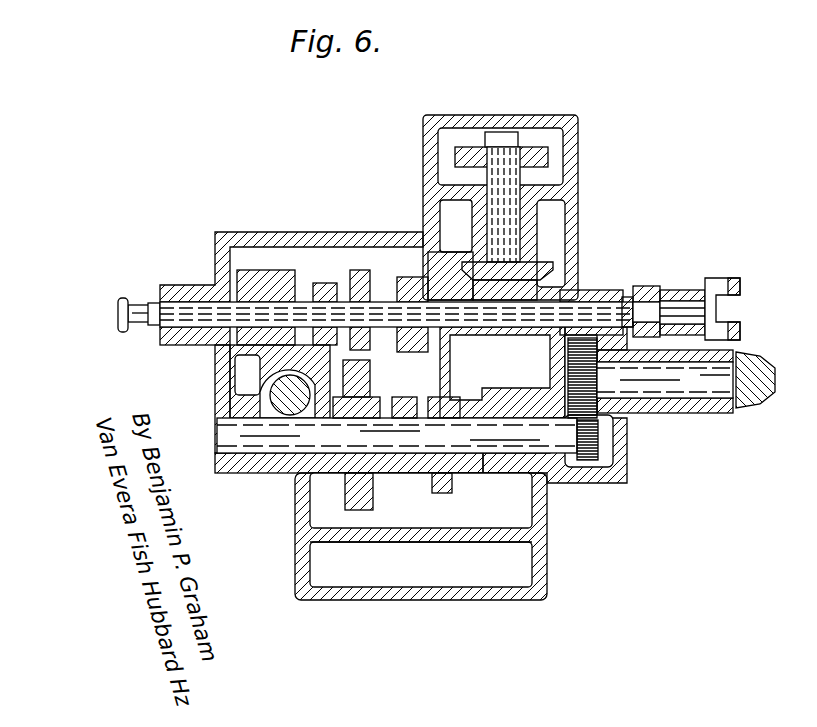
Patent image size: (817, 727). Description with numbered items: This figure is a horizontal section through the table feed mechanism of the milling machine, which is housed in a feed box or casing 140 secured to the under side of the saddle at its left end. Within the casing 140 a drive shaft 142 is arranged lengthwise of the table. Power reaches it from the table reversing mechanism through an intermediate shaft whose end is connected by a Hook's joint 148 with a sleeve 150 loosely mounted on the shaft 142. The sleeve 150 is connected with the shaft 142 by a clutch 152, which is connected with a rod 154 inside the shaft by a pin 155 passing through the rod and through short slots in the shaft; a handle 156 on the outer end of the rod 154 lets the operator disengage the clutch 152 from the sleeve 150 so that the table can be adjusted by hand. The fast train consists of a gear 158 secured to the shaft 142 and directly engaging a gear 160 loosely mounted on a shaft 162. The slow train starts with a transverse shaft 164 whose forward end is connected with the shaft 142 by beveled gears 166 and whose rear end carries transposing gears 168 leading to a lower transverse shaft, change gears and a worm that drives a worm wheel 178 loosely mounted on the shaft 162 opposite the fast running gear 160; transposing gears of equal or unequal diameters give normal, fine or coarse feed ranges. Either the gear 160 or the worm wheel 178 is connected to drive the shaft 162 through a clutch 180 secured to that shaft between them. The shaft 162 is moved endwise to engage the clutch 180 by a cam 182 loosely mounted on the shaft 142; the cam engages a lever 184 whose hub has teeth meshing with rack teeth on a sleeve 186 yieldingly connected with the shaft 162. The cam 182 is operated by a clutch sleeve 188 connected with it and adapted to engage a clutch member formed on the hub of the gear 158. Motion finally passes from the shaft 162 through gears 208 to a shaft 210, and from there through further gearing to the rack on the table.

The feed box or casing 140 is at (578, 215).
The drive shaft 142 is at (600, 292).
The Hook's joint 148 is at (742, 283).
The sleeve 150 is at (688, 292).
The clutch 152 is at (648, 290).
The rod 154 is at (152, 302).
The pin 155 is at (632, 296).
The handle 156 is at (125, 298).
The gear 158 is at (428, 274).
The gear 160 is at (452, 488).
The shaft 162 is at (560, 438).
The transverse shaft 164 is at (497, 182).
The beveled gears 166 is at (460, 266).
The transposing gears 168 is at (456, 153).
The worm wheel 178 is at (373, 508).
The clutch 180 is at (405, 476).
The cam 182 is at (262, 268).
The lever 184 is at (268, 383).
The sleeve 186 is at (228, 430).
The clutch sleeve 188 is at (357, 278).
The gears 208 is at (590, 413).
The shaft 210 is at (704, 382).